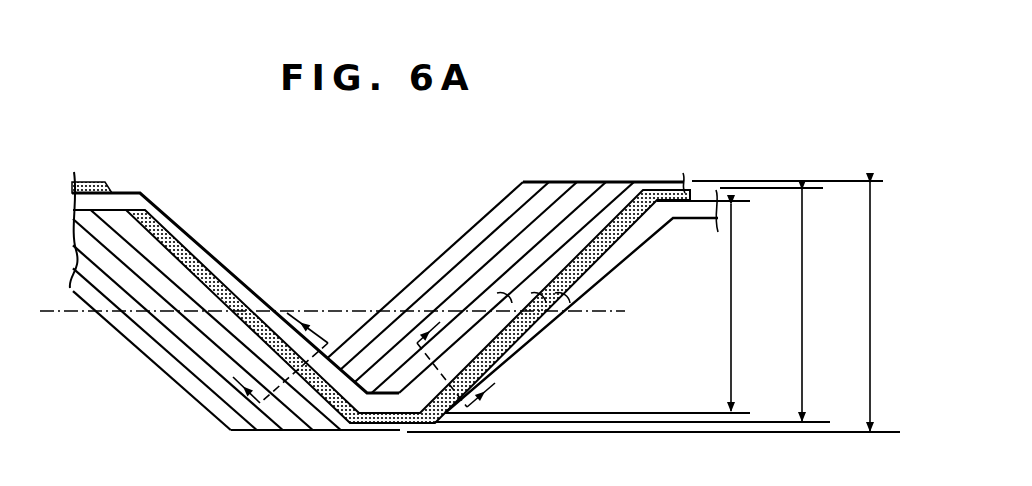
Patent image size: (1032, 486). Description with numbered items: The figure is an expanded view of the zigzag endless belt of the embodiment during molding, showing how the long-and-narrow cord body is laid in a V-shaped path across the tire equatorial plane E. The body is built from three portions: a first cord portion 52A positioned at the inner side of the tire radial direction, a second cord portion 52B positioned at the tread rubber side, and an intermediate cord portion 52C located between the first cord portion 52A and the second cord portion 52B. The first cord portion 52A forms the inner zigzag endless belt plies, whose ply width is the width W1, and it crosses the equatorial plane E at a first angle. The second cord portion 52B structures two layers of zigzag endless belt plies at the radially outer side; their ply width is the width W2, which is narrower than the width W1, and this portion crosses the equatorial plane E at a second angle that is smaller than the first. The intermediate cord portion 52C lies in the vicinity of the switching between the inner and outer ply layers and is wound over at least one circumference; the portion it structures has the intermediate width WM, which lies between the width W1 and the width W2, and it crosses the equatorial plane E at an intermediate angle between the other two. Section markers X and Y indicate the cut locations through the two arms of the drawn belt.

The first cord portion 52A is at (645, 182).
The second cord portion 52B is at (647, 238).
The intermediate cord portion 52C is at (510, 338).
The tire equatorial plane E is at (62, 311).
The width of zigzag endless belt plies W1 is at (871, 280).
The intermediate width WM is at (803, 280).
The width of zigzag endless belt plies W2 is at (733, 282).
The section line X- X is at (277, 346).
The section line Y- Y is at (467, 354).